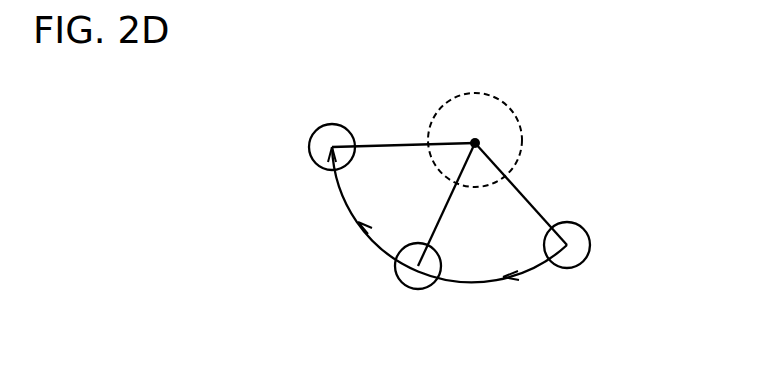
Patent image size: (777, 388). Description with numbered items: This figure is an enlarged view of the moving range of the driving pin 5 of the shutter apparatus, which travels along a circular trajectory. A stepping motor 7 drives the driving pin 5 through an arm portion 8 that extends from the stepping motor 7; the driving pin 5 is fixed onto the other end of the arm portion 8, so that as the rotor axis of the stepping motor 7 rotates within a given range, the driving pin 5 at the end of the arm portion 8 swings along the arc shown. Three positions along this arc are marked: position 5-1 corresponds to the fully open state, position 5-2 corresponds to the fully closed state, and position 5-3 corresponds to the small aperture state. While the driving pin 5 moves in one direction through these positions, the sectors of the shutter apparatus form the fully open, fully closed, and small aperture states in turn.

The driving pin 5 is at (433, 221).
The position corresponding to fully open state 5-1 is at (573, 255).
The position corresponding to fully closed state 5-2 is at (413, 278).
The position corresponding to small aperture state 5-3 is at (320, 147).
The stepping motor 7 is at (510, 111).
The arm portion 8 is at (404, 143).